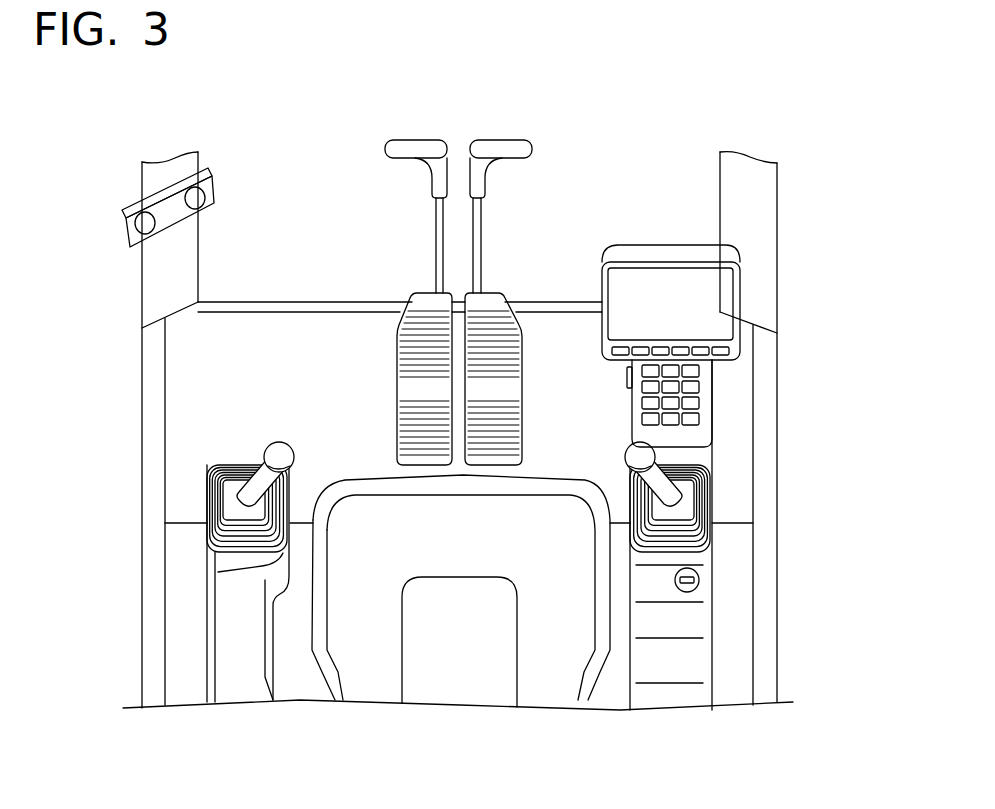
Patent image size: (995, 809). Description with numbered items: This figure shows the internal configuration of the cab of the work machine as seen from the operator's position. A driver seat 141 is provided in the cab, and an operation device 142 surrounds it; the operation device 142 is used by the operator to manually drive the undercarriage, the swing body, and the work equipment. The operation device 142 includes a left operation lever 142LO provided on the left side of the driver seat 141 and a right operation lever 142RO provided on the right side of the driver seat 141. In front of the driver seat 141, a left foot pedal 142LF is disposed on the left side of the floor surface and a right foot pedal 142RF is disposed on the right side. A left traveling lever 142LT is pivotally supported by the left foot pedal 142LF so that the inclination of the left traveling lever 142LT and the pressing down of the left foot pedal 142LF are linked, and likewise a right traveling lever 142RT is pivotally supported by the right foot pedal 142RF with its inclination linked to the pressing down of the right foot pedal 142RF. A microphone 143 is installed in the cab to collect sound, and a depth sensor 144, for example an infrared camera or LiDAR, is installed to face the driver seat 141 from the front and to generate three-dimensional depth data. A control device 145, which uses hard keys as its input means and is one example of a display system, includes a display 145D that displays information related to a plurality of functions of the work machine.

The driver seat 141 is at (460, 702).
The operation device 142 is at (308, 207).
The left traveling lever 142LT is at (420, 140).
The right traveling lever 142RT is at (500, 140).
The left foot pedal 142LF is at (418, 293).
The right foot pedal 142RF is at (525, 267).
The left operation lever 142LO is at (276, 443).
The right operation lever 142RO is at (657, 457).
The microphone 143 is at (134, 180).
The depth sensor 144 is at (190, 187).
The control device 145 is at (725, 346).
The display 145D is at (740, 275).